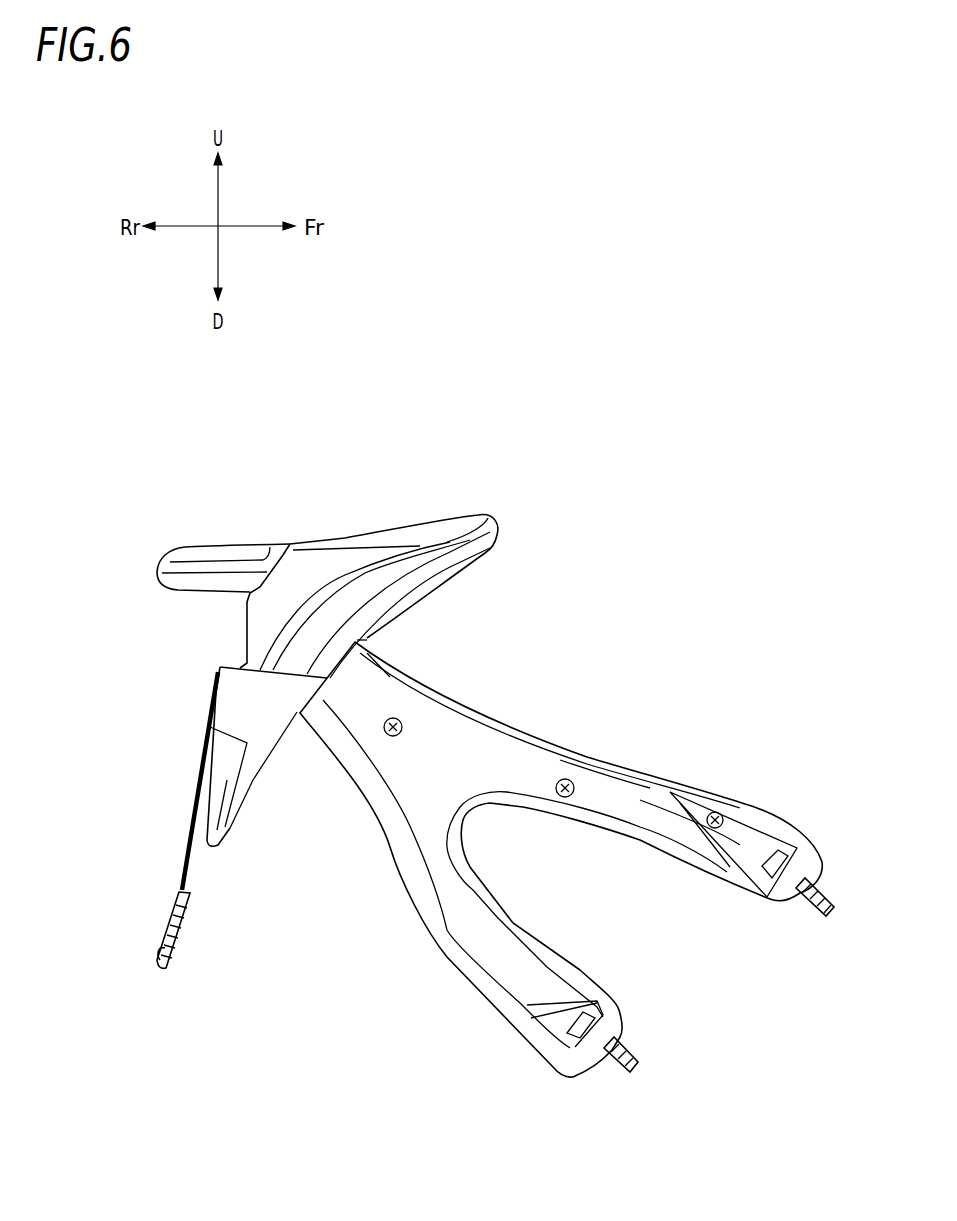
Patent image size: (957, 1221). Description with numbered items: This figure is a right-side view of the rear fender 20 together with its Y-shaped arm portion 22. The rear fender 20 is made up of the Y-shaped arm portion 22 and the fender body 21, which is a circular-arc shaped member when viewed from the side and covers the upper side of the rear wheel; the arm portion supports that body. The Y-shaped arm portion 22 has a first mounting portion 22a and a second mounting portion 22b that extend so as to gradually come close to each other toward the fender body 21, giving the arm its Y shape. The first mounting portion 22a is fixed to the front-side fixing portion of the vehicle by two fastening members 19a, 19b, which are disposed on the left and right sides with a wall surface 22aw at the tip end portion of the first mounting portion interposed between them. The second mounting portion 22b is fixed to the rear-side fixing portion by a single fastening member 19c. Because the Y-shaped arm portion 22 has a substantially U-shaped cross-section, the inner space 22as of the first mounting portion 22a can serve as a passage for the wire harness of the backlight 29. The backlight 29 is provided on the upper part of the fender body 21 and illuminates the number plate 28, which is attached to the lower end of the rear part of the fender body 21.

The rear fender 20 is at (599, 566).
The fender body 21 is at (423, 570).
The Y-shaped arm portion 22 is at (615, 749).
The first mounting portion 22a is at (663, 773).
The inner space 22as is at (588, 782).
The wall surface 22aw is at (758, 826).
The second mounting portion 22b is at (543, 938).
The fastening member 19a is at (815, 897).
The fastening member 19b is at (828, 893).
The fastening member 19c is at (637, 1052).
The number plate 28 is at (180, 878).
The backlight 29 is at (198, 593).